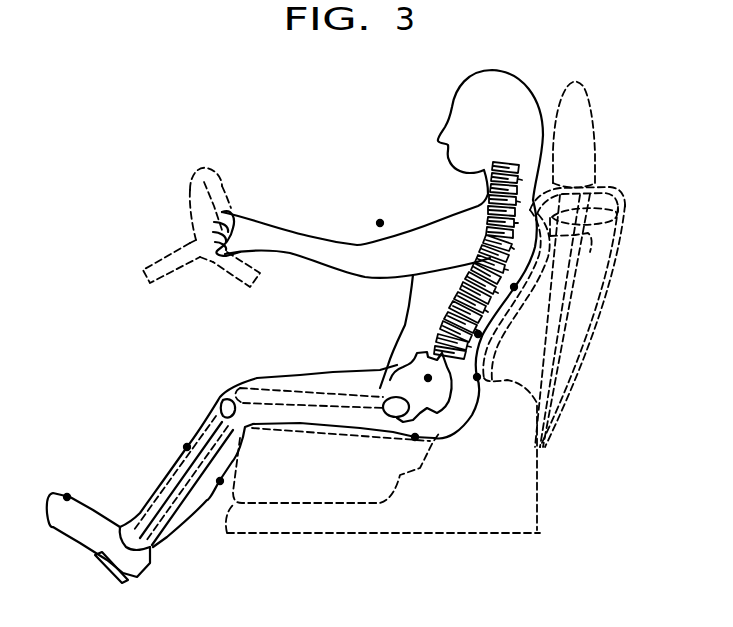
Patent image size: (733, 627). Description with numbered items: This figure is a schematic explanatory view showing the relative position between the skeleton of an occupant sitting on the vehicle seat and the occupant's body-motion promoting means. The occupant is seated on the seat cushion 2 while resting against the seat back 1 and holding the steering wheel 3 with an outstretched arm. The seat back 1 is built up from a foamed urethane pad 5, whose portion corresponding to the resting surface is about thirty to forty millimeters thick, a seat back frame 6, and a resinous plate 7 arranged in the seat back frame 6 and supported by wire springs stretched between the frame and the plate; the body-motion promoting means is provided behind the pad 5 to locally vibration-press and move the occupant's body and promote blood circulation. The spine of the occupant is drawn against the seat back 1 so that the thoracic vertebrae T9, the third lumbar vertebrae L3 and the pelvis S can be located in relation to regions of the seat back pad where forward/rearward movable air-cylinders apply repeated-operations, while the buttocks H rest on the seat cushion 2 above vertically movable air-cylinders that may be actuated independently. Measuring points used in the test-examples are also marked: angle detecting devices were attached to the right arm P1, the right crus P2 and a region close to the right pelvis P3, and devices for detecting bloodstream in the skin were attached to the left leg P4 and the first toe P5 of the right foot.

The seat back 1 is at (619, 191).
The seat cushion 2 is at (267, 504).
The steering wheel 3 is at (220, 172).
The foamed urethane pad 5 is at (535, 263).
The seat back frame 6 is at (626, 218).
The resinous plate 7 is at (628, 276).
The right arm P1 is at (380, 223).
The right crus P2 is at (187, 447).
The right pelvis P3 is at (428, 378).
The left leg P4 is at (220, 481).
The first toe P5 is at (67, 497).
The buttocks H is at (415, 437).
The thoracic vertebrae T9 is at (514, 287).
The third lumbar vertebrae L3 is at (478, 334).
The pelvis S is at (477, 377).